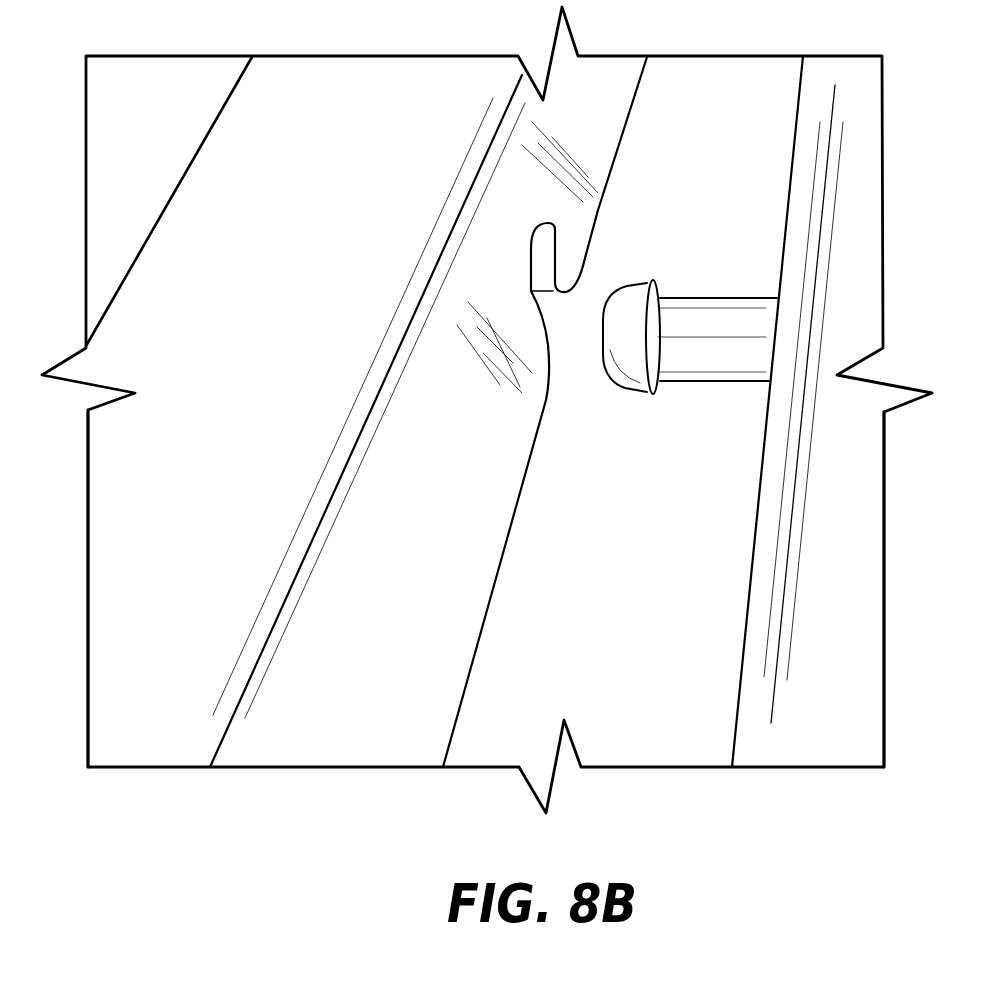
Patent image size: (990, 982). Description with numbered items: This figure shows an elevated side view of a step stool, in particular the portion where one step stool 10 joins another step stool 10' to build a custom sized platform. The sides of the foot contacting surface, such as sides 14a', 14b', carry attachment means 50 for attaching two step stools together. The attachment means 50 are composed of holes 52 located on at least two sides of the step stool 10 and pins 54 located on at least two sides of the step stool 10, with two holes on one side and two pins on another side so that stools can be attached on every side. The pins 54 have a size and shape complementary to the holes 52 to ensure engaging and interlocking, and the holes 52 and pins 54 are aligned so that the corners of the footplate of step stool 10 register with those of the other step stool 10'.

The step stool 10 is at (169, 453).
The another step stool 10' is at (912, 589).
The side of the foot contacting surface 14a' is at (787, 454).
The side of the foot contacting surface 14b' is at (404, 462).
The attachment means 50 is at (610, 265).
The hole 52 is at (545, 266).
The pin 54 is at (690, 363).